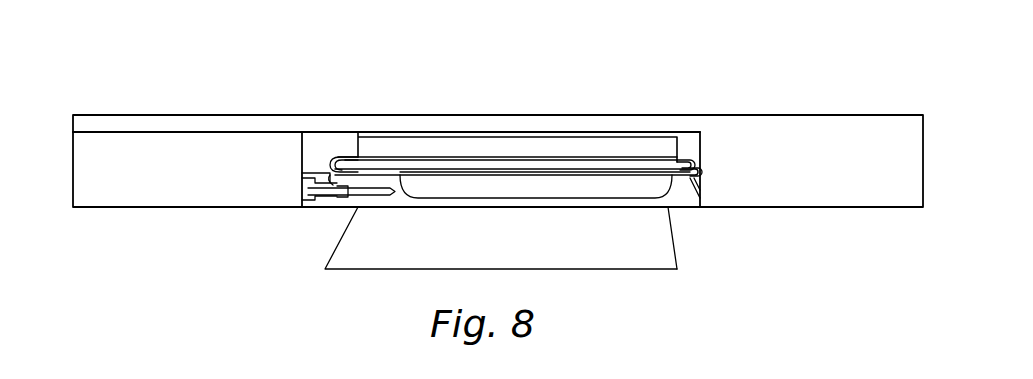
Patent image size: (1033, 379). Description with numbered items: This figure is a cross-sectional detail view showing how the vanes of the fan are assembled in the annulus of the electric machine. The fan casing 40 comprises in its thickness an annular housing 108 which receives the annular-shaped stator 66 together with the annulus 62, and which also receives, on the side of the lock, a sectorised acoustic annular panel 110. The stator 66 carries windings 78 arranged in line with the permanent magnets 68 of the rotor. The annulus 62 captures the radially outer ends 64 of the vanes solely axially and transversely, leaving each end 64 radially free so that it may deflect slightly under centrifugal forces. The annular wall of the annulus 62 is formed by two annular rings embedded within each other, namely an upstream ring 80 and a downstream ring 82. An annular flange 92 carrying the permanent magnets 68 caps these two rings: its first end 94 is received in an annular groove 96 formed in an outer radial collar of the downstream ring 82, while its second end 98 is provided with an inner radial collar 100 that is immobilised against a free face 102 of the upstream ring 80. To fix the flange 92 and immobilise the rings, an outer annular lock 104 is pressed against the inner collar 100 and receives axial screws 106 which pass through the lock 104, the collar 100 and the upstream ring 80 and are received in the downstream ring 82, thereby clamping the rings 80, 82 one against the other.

The fan casing 40 is at (830, 137).
The annulus 62 is at (692, 177).
The radially outer ends of the vanes 64 is at (437, 198).
The stator 66 is at (535, 145).
The permanent magnets 68 is at (558, 165).
The windings 78 is at (610, 148).
The upstream ring 80 is at (360, 195).
The downstream ring 82 is at (675, 200).
The annular flange 92 is at (627, 173).
The first end of the flange 94 is at (683, 163).
The annular groove 96 is at (703, 168).
The second end of the flange 98 is at (342, 162).
The inner radial collar 100 is at (335, 183).
The free face 102 is at (350, 205).
The outer annular lock 104 is at (328, 165).
The axial screws 106 is at (300, 190).
The annular housing 108 is at (684, 160).
The sectorised acoustic annular panel 110 is at (113, 193).